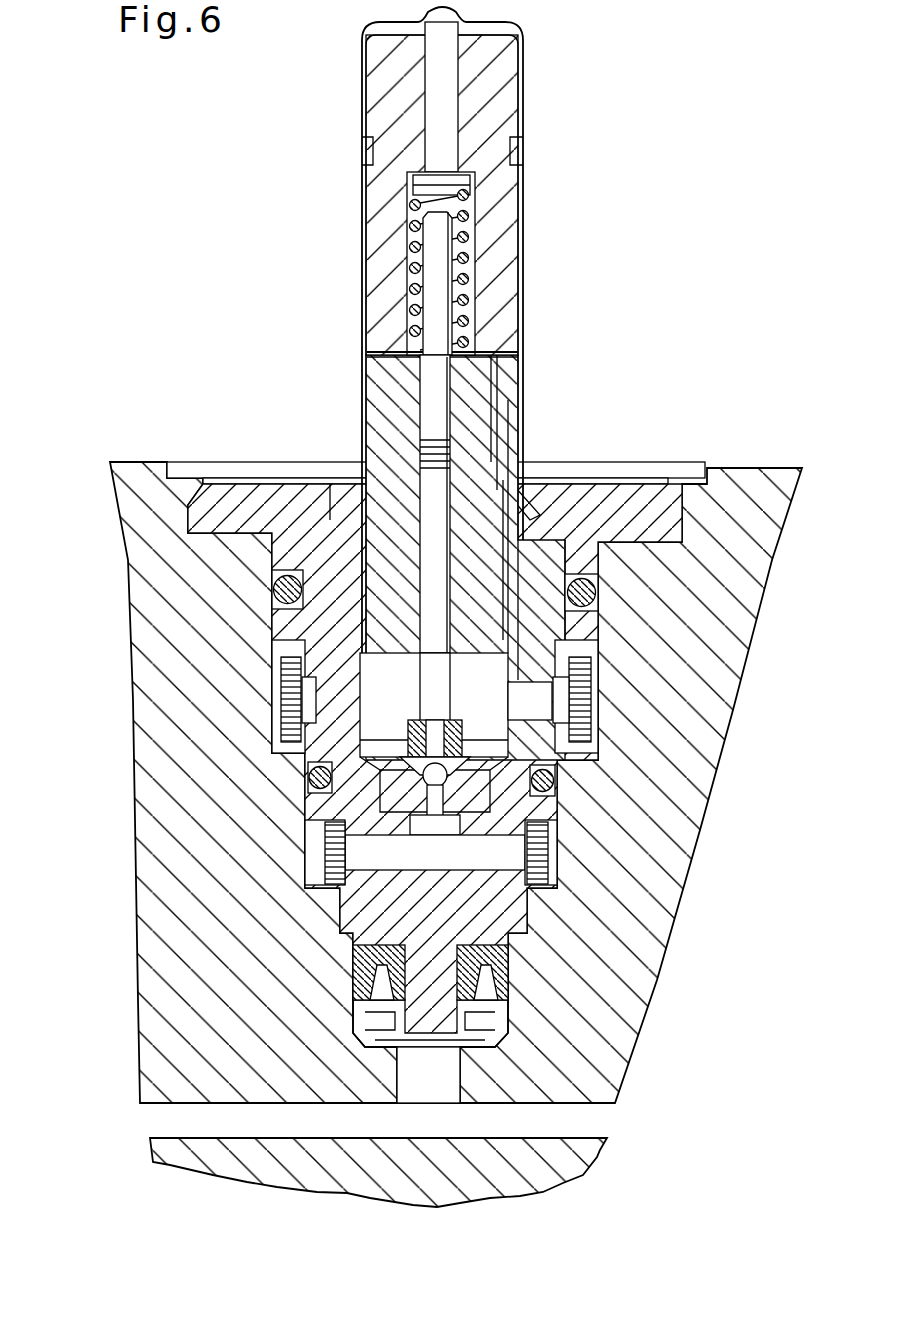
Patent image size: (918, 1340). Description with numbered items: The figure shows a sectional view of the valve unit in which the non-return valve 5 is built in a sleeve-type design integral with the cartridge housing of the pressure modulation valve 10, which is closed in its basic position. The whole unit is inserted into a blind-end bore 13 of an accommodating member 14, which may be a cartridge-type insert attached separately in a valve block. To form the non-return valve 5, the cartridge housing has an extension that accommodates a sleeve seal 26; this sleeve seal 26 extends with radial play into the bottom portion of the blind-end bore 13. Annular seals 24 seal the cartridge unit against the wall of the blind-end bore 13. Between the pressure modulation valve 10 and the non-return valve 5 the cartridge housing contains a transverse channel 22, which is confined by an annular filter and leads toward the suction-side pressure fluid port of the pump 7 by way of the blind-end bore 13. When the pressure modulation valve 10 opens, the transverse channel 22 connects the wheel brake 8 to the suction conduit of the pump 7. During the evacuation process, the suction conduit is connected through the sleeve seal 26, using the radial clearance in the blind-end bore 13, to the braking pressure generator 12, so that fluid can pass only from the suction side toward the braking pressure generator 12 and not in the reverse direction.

The non-return valve 5 is at (385, 1047).
The pump 7 is at (80, 852).
The wheel brake 8 is at (80, 700).
The pressure modulation valve 10 is at (292, 487).
The braking pressure generator 12 is at (140, 1118).
The blind-end bore 13 is at (490, 1045).
The accommodating member 14 is at (758, 485).
The transverse channel 22 is at (535, 852).
The annular seal 24 is at (600, 585).
The sleeve seal 26 is at (508, 972).